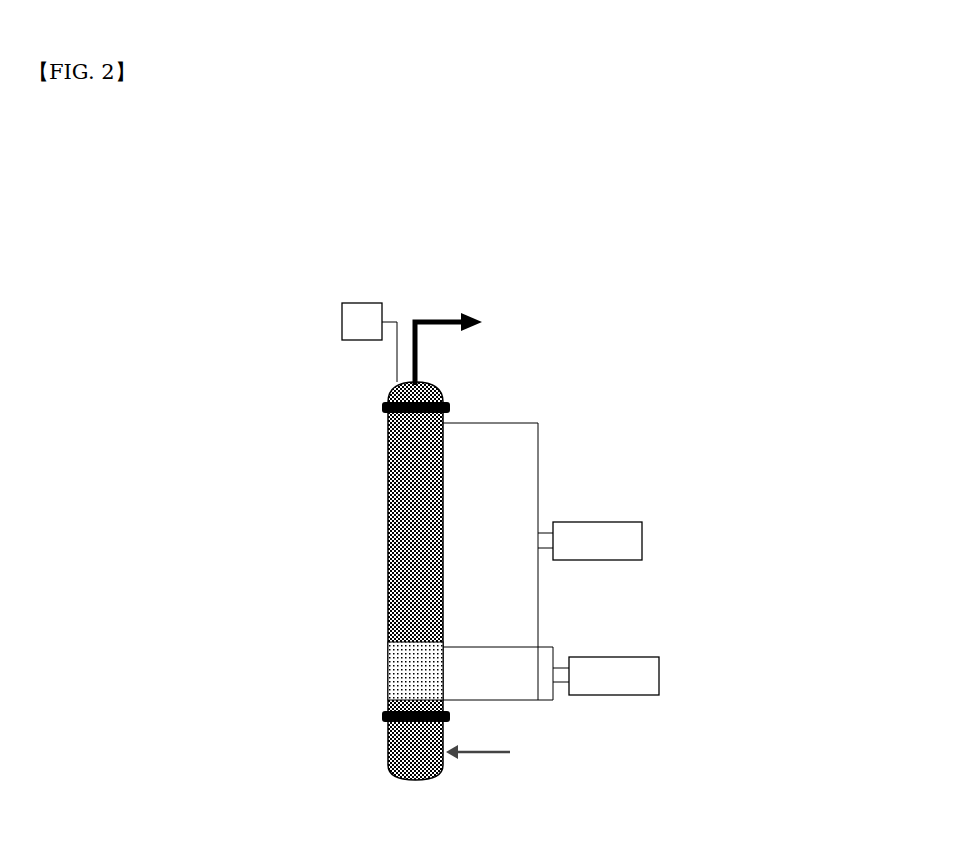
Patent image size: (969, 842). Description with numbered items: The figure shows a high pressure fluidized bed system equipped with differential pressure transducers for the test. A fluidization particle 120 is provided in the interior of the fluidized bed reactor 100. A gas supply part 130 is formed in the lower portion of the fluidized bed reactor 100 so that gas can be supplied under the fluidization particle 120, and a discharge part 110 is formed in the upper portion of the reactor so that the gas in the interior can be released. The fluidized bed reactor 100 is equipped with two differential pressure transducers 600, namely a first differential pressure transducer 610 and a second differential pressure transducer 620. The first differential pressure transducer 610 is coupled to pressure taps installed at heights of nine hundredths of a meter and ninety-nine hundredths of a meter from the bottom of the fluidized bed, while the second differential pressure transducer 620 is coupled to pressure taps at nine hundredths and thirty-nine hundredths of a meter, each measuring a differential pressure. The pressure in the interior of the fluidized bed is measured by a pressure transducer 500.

The fluidized bed reactor 100 is at (293, 546).
The discharge part 110 is at (383, 403).
The fluidization particle 120 is at (388, 667).
The gas supply part 130 is at (388, 752).
The pressure transducer 500 is at (332, 320).
The differential pressure transducers 600 is at (680, 586).
The first differential pressure transducer 610 is at (650, 537).
The second differential pressure transducer 620 is at (667, 683).